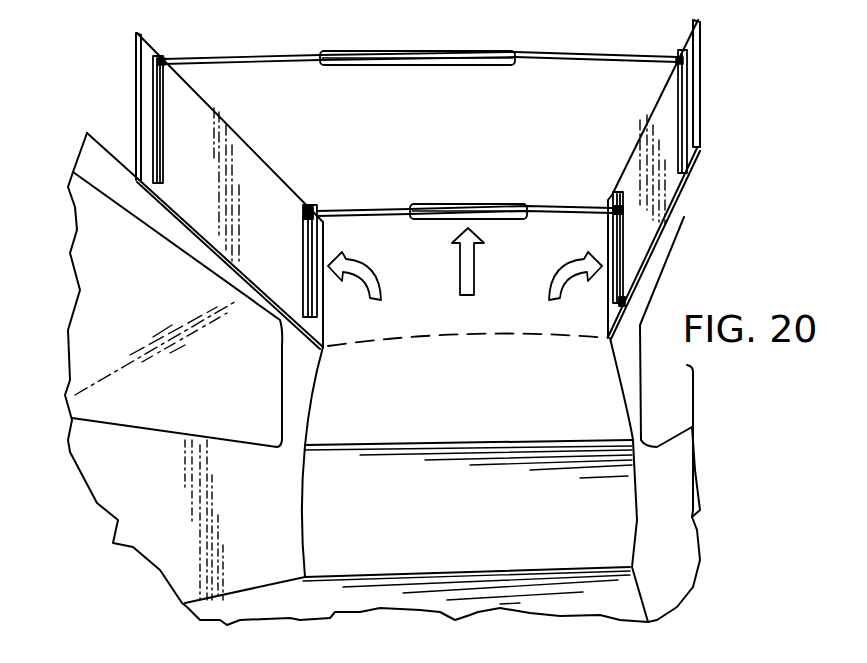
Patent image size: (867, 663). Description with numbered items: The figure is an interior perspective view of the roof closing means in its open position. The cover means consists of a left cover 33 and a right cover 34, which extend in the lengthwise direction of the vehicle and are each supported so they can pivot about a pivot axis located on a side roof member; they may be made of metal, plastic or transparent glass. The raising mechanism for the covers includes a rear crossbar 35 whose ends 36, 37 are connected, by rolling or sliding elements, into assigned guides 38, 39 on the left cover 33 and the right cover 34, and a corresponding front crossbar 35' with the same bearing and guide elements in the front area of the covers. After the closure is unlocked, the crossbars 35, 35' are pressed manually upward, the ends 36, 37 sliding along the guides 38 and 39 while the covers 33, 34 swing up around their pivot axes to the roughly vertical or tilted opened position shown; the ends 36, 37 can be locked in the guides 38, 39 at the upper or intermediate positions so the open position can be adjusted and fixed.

The left cover 33 is at (198, 187).
The right cover 34 is at (638, 210).
The rear crossbar 35 is at (420, 36).
The front crossbar 35' is at (465, 180).
The end of rear crossbar 36 is at (163, 60).
The end of rear crossbar 37 is at (678, 60).
The guide 38 is at (157, 118).
The guide 39 is at (685, 110).